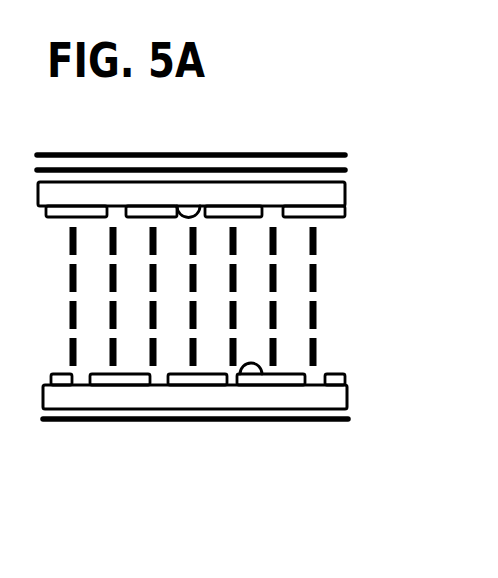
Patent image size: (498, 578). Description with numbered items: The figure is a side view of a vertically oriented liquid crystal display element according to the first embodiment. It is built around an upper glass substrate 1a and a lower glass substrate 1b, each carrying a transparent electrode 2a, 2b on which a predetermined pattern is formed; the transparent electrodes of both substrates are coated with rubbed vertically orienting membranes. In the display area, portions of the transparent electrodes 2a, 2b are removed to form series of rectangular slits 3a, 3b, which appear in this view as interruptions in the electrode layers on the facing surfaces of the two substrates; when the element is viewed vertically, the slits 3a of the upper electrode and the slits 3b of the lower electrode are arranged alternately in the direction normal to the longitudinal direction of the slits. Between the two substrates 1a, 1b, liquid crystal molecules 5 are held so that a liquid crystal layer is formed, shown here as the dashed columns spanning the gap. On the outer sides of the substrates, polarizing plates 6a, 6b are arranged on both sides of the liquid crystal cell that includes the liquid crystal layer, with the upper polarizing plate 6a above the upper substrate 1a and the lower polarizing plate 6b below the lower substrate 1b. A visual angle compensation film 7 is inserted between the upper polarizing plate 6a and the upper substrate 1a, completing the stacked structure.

The upper polarizing plate 6a is at (343, 155).
The visual angle compensation film 7 is at (345, 168).
The upper glass substrate 1a is at (340, 197).
The transparent electrode 2a is at (330, 213).
The rectangular slits 3a is at (183, 218).
The liquid crystal molecules 5 is at (315, 313).
The transparent electrode 2b is at (342, 370).
The rectangular slits 3b is at (263, 374).
The lower glass substrate 1b is at (338, 397).
The lower polarizing plate 6b is at (348, 418).